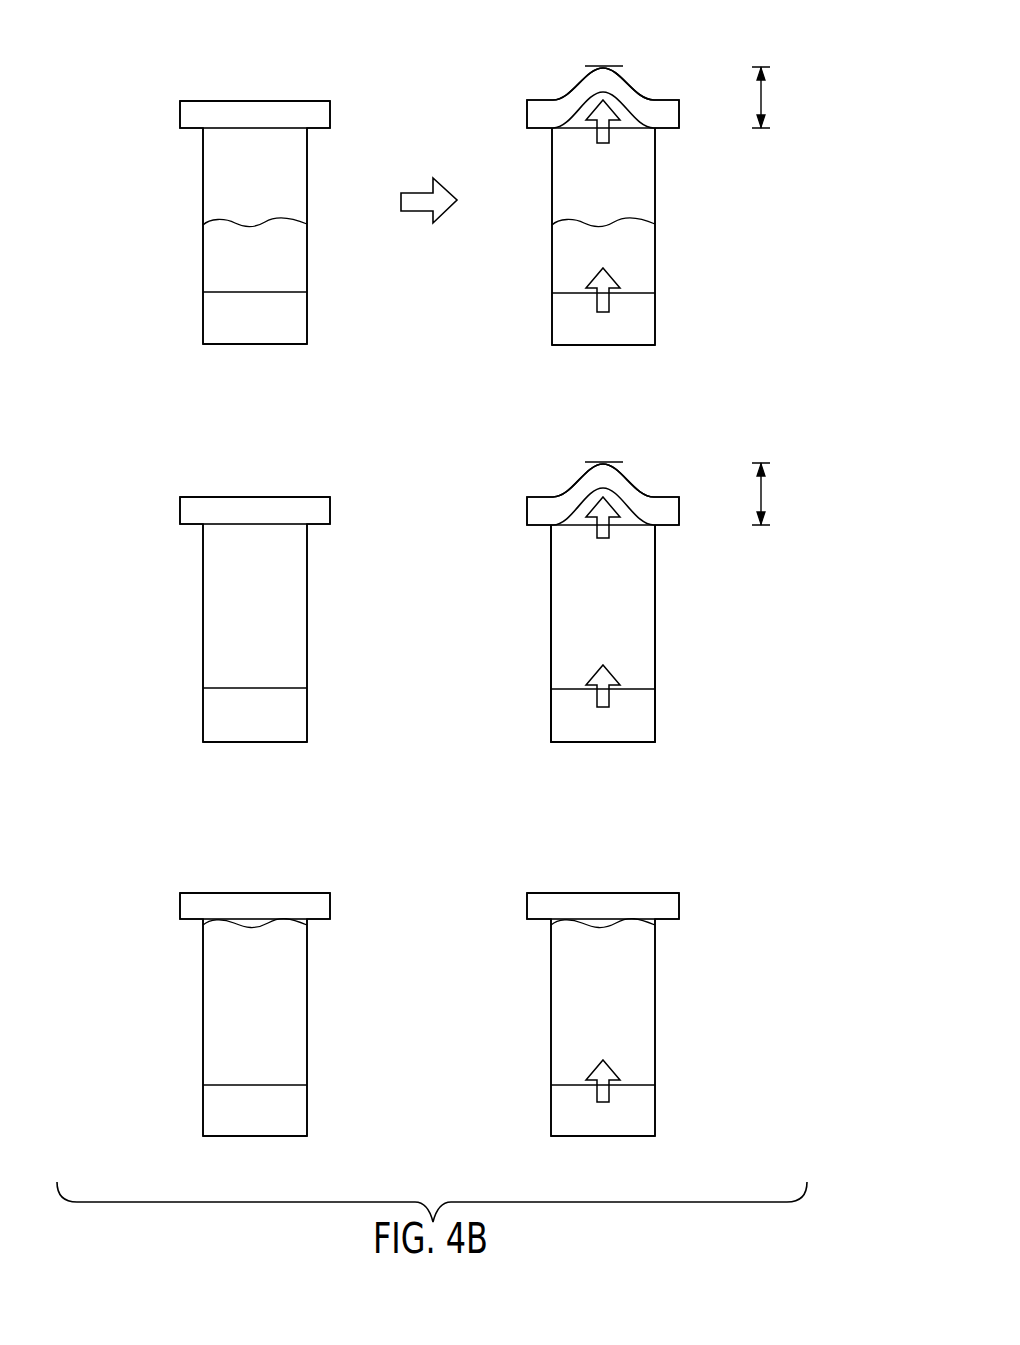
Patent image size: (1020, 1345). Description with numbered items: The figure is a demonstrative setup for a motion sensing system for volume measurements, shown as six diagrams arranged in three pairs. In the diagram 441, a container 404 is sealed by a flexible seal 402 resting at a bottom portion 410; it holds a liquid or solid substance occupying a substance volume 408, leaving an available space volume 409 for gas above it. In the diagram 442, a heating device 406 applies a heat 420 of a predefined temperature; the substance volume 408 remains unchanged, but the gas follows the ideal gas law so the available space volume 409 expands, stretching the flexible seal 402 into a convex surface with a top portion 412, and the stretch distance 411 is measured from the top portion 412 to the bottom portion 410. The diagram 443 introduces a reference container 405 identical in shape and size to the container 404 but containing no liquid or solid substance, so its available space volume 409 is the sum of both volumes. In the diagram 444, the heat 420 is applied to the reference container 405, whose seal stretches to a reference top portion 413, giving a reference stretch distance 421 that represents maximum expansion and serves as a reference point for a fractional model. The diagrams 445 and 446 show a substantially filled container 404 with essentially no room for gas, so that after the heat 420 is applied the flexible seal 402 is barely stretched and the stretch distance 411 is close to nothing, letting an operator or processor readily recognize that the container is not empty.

The flexible seal 402 is at (322, 114).
The container 404 is at (308, 178).
The reference container 405 is at (308, 575).
The heating device 406 is at (307, 344).
The substance volume 408 is at (300, 260).
The available space volume 409 is at (210, 178).
The bottom portion 410 is at (255, 97).
The stretch distance 411 is at (763, 97).
The top portion 412 is at (603, 63).
The reference top portion 413 is at (603, 459).
The heat 420 is at (595, 298).
The reference stretch distance 421 is at (763, 492).
The diagram 441 is at (168, 343).
The diagram 442 is at (536, 347).
The diagram 443 is at (168, 740).
The diagram 444 is at (538, 757).
The diagram 445 is at (168, 1136).
The diagram 446 is at (535, 1139).